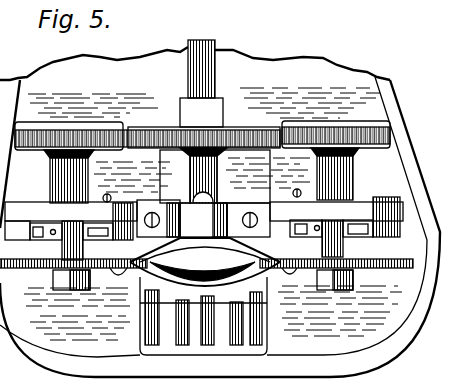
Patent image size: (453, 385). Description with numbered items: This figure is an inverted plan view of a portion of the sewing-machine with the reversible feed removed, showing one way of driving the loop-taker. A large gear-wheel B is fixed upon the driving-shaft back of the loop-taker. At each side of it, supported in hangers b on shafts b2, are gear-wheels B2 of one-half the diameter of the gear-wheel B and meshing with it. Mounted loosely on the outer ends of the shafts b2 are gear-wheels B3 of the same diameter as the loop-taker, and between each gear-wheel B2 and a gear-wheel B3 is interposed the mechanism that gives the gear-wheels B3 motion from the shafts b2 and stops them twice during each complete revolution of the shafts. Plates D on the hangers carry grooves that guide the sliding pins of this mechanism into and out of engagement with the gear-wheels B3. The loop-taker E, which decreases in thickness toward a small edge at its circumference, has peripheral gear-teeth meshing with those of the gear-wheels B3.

The gear-wheel B is at (143, 125).
The gear-wheels B2 is at (97, 125).
The shafts b2 is at (92, 156).
The hangers b is at (58, 210).
The plates D is at (15, 232).
The gear-wheels B3 is at (40, 272).
The loop-taker E is at (181, 282).